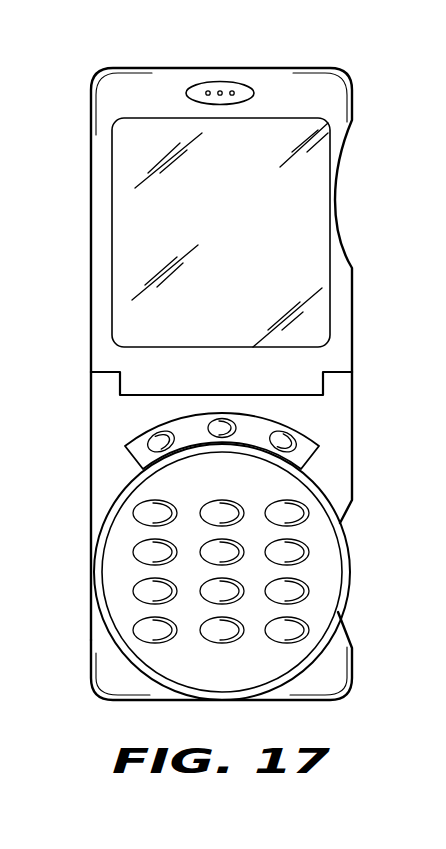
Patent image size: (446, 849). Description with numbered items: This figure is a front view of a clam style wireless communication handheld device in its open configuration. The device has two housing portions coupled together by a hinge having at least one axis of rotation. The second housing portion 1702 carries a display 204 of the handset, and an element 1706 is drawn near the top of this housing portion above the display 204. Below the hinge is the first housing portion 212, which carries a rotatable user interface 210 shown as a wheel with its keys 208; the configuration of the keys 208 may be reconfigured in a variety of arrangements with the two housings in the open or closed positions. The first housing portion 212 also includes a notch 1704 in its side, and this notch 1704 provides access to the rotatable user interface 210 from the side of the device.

The second housing portion 1702 is at (336, 192).
The notch 1704 is at (343, 626).
The speaker 1706 is at (254, 94).
The display 204 is at (112, 246).
The keys 208 is at (140, 466).
The rotatable user interface 210 is at (343, 575).
The first housing portion 212 is at (353, 441).